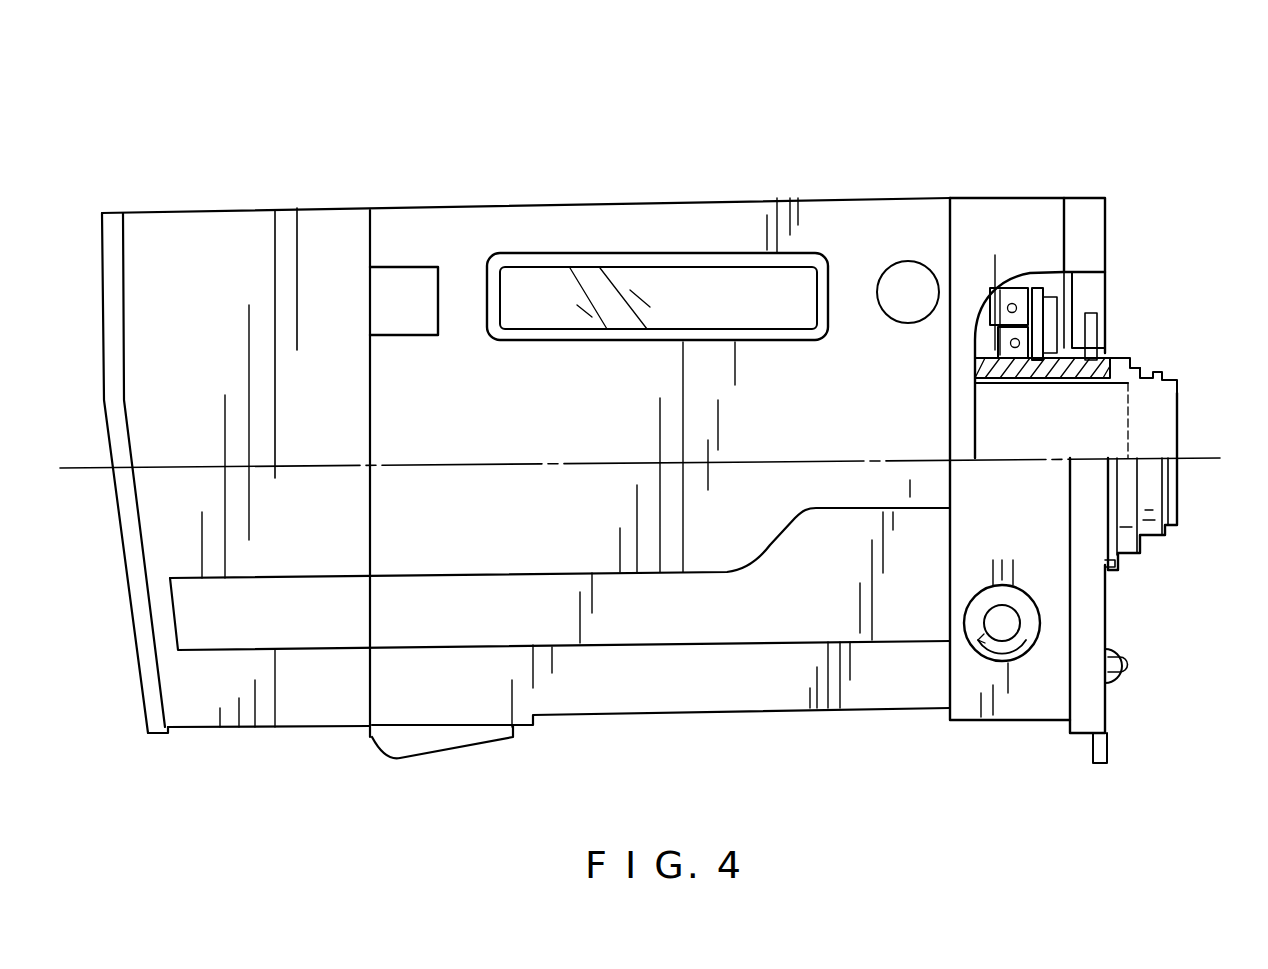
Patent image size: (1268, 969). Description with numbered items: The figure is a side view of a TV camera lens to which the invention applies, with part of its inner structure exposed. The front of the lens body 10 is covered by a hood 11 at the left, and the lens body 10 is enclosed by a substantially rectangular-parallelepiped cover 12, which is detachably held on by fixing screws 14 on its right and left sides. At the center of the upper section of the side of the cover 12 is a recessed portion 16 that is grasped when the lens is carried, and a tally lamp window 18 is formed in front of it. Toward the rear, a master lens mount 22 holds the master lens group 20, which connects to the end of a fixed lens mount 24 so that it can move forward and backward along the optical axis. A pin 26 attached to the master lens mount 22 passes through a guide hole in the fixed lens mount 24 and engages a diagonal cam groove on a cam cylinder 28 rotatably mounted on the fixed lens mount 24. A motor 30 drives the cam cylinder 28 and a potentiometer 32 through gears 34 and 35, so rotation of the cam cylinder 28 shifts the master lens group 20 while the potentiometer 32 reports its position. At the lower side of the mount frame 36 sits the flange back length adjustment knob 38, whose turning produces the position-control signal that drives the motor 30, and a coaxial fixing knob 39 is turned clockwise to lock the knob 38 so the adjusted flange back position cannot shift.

The lens body 10 is at (797, 118).
The hood 11 is at (212, 232).
The cover 12 is at (582, 218).
The fixing screws 14 is at (903, 275).
The recessed portion 16 is at (695, 285).
The tally lamp window 18 is at (408, 285).
The master lens group 20 is at (1118, 440).
The master lens mount 22 is at (1140, 378).
The fixed lens mount 24 is at (1000, 383).
The pin 26 is at (1090, 345).
The cam cylinder 28 is at (1112, 355).
The motor 30 is at (1017, 272).
The potentiometer 32 is at (1057, 338).
The gear 34 is at (1043, 330).
The gear 35 is at (998, 345).
The mount frame 36 is at (1008, 225).
The flange back length adjustment knob 38 is at (1005, 623).
The fixing knob 39 is at (1025, 618).